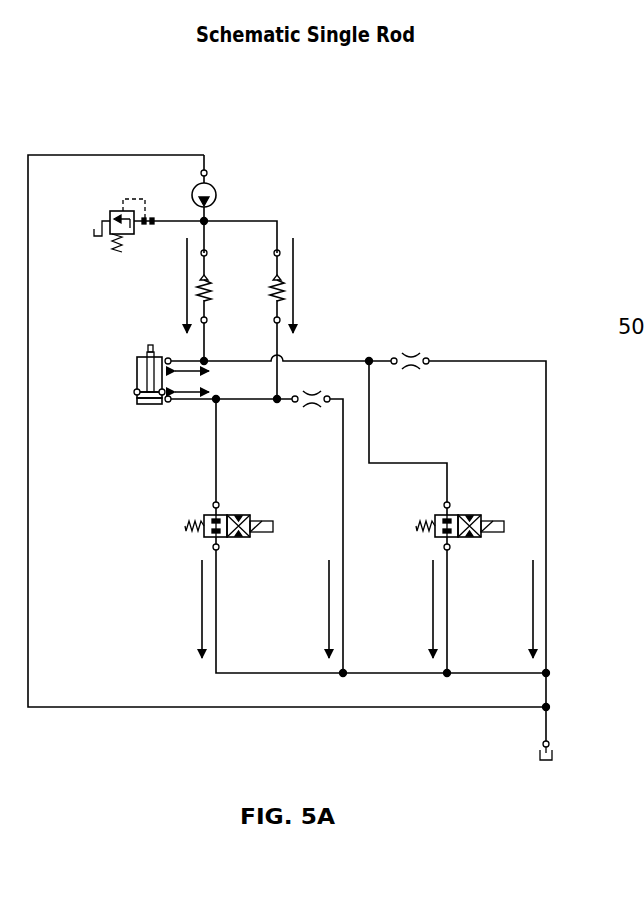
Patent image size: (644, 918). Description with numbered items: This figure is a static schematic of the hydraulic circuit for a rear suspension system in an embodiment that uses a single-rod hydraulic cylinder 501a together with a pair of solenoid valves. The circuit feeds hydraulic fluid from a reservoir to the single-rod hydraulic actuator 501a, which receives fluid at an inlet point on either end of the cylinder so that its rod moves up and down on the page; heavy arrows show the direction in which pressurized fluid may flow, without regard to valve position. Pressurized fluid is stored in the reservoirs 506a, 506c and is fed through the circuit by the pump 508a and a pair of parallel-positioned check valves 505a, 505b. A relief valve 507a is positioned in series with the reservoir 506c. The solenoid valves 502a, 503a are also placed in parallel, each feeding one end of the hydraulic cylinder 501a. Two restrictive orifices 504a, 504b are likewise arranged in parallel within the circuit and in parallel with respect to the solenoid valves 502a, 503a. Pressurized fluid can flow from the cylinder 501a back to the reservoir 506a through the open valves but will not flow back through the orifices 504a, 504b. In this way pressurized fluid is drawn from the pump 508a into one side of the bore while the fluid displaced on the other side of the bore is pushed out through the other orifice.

The pump 508a is at (216, 193).
The relief valve 507a is at (131, 236).
The reservoir 506c is at (99, 235).
The check valve 505a is at (209, 290).
The check valve 505b is at (281, 292).
The single-rod hydraulic cylinder 501a is at (150, 405).
The restrictive orifice 504a is at (312, 410).
The restrictive orifice 504b is at (412, 369).
The solenoid valve 502a is at (245, 540).
The solenoid valve 503a is at (477, 540).
The reservoir 506a is at (553, 756).